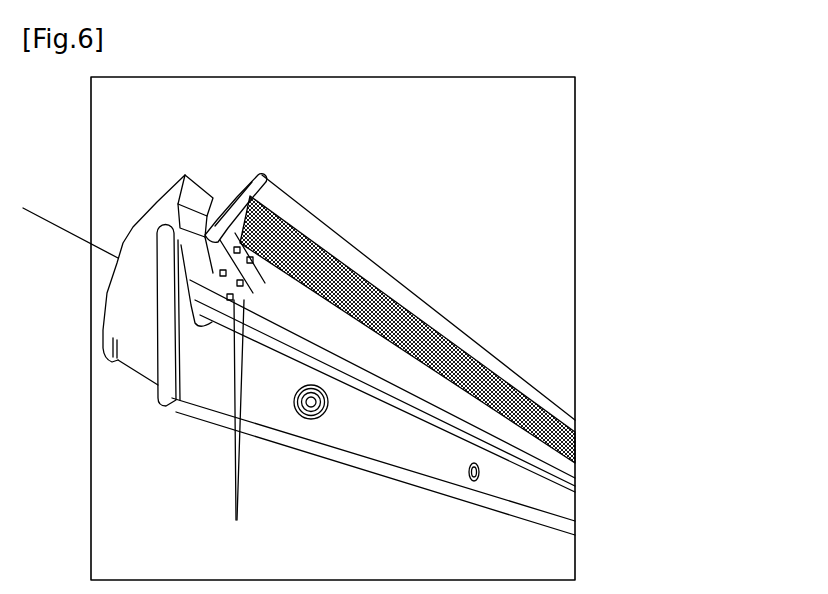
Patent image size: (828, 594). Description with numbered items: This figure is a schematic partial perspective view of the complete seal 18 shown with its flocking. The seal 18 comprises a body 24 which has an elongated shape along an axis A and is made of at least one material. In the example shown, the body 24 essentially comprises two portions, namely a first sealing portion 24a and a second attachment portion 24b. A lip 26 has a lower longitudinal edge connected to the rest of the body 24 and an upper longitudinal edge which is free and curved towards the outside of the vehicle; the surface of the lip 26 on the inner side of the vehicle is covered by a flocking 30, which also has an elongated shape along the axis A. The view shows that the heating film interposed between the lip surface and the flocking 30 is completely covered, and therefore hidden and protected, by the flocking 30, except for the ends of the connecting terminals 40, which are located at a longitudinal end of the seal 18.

The seal 18 is at (636, 272).
The body 24 is at (152, 418).
The first sealing portion 24a is at (118, 362).
The second attachment portion 24b is at (263, 201).
The lip 26 is at (254, 178).
The flocking 30 is at (398, 298).
The connecting terminals 40 is at (234, 425).
The axis A is at (47, 218).